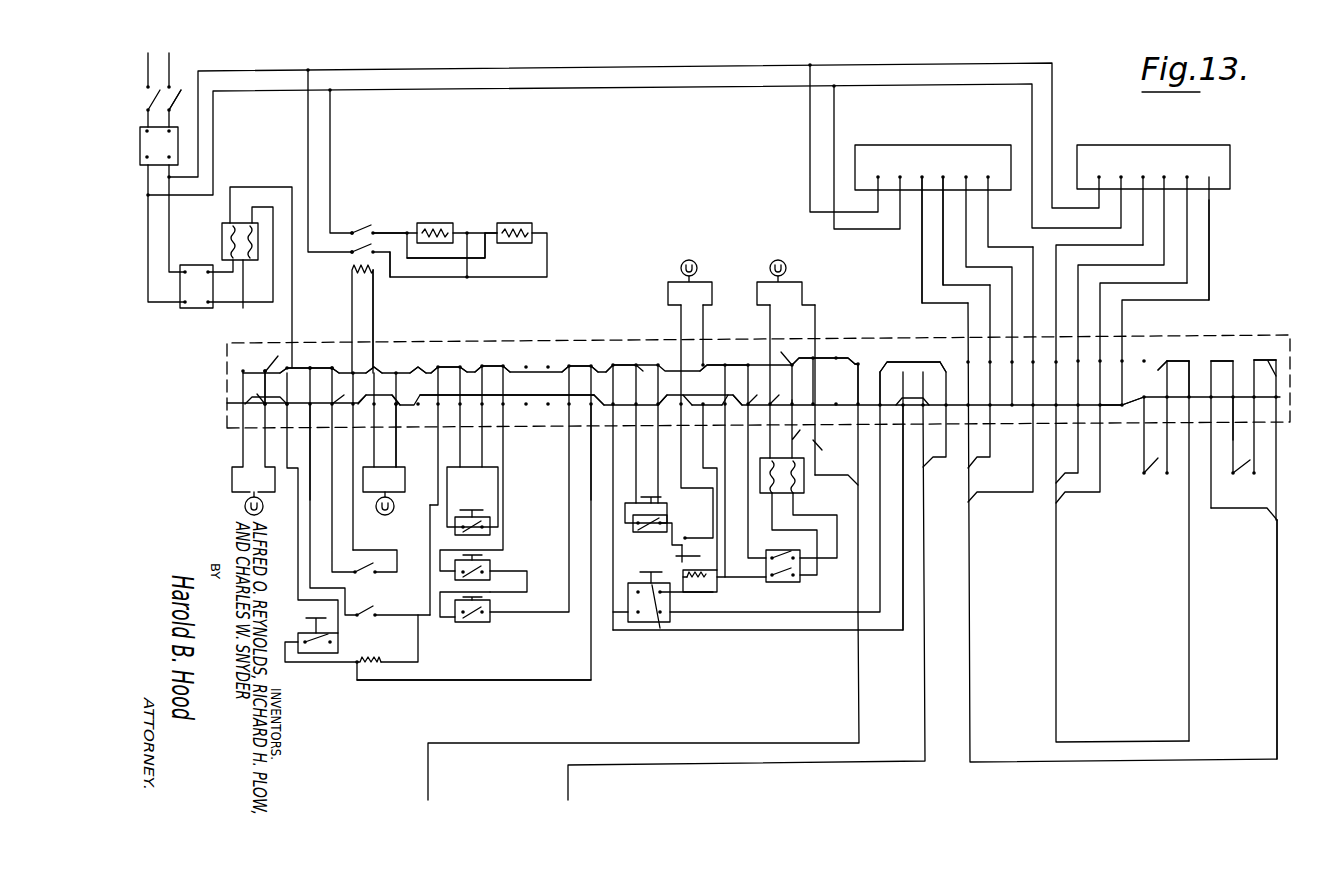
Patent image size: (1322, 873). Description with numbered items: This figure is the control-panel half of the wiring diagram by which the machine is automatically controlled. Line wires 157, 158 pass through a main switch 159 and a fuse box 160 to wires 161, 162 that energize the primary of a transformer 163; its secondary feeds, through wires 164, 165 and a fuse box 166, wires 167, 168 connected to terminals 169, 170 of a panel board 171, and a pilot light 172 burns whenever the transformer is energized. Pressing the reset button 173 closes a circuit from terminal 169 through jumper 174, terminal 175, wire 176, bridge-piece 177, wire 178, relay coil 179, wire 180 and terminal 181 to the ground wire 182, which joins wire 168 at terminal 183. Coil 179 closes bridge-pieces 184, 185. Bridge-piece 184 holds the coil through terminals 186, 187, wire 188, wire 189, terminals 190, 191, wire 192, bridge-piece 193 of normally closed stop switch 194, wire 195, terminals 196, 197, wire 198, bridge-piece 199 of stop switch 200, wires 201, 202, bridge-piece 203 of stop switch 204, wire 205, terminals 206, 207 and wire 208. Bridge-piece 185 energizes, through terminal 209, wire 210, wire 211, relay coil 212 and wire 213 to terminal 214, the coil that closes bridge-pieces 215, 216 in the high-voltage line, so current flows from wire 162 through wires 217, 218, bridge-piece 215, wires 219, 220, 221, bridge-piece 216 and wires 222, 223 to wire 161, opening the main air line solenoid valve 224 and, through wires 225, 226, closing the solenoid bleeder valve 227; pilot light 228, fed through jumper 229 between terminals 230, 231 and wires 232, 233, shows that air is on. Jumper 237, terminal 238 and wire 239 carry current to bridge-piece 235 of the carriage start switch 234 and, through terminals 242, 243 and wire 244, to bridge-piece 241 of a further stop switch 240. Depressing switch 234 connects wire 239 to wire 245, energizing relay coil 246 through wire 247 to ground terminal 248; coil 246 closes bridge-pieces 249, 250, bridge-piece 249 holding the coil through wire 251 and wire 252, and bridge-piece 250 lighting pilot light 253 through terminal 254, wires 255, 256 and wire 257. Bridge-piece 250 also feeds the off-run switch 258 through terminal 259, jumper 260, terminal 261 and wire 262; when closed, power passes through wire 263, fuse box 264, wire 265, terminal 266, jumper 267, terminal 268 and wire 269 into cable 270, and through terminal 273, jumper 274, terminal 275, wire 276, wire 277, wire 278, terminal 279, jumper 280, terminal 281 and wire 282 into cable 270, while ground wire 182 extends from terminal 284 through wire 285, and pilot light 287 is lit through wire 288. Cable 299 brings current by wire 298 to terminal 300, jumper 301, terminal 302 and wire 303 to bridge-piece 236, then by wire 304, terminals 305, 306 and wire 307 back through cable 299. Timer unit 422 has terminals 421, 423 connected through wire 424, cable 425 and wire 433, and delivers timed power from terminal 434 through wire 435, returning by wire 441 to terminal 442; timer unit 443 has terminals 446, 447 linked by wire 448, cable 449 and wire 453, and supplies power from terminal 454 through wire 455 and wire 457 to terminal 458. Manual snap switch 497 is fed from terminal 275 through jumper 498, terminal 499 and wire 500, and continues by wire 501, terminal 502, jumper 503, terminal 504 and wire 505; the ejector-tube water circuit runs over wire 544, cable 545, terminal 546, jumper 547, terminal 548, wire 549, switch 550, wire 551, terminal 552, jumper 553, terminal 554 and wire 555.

The switch contact 157 is at (150, 57).
The switch contact 158 is at (172, 56).
The switch blade 159 is at (173, 92).
The switch 160 is at (176, 136).
The conductor 161 is at (150, 304).
The conductor 162 is at (173, 221).
The relay 163 is at (193, 309).
The conductor 164 is at (230, 304).
The conductor 165 is at (221, 276).
The resistor unit 166 is at (222, 246).
The control panel 167 is at (227, 357).
The conductor 168 is at (293, 289).
The bus bar 169 is at (227, 405).
The contact 170 is at (268, 406).
The contact 171 is at (448, 366).
The lamp 172 is at (245, 507).
The relay coil 173 is at (321, 619).
The contact 174 is at (262, 397).
The contact 175 is at (290, 406).
The conductor 176 is at (298, 527).
The relay contacts 177 is at (302, 641).
The conductor 178 is at (318, 663).
The coil 179 is at (371, 660).
The conductor 180 is at (420, 652).
The contact 181 is at (420, 366).
The conductor 182 is at (351, 368).
The contact 183 is at (268, 368).
The switch 184 is at (372, 612).
The switch 185 is at (360, 571).
The contact 186 is at (290, 366).
The contact 187 is at (311, 366).
The conductor 188 is at (312, 440).
The conductor 189 is at (428, 616).
The contact 190 is at (440, 366).
The contact 191 is at (463, 366).
The relay 192 is at (442, 494).
The relay contacts 193 is at (465, 530).
The contact blade 194 is at (477, 513).
The relay coil 195 is at (476, 495).
The contact 196 is at (486, 365).
The contact 197 is at (507, 365).
The conductor 198 is at (504, 450).
The relay contacts 199 is at (485, 575).
The relay coil 200 is at (484, 556).
The conductor 201 is at (528, 580).
The conductor 202 is at (527, 593).
The relay contacts 203 is at (485, 622).
The relay coil 204 is at (484, 598).
The conductor 205 is at (540, 613).
The contact 206 is at (572, 365).
The contact 207 is at (594, 365).
The conductor 208 is at (493, 542).
The contact 209 is at (334, 367).
The conductor 210 is at (312, 508).
The conductor 211 is at (353, 540).
The coil 212 is at (364, 275).
The conductor 213 is at (375, 312).
The contact 214 is at (376, 366).
The switch 215 is at (356, 254).
The switch 216 is at (364, 227).
The conductor 217 is at (247, 70).
The conductor 218 is at (306, 141).
The circuit 219 is at (424, 275).
The conductor 220 is at (470, 232).
The conductor 221 is at (406, 231).
The conductor 222 is at (331, 170).
The conductor 223 is at (265, 92).
The resistor 224 is at (446, 222).
The conductor 225 is at (548, 268).
The conductor 226 is at (487, 258).
The resistor 227 is at (534, 222).
The lamp 228 is at (392, 514).
The contact 229 is at (368, 400).
The contact 230 is at (355, 405).
The contact 231 is at (399, 406).
The conductor 232 is at (397, 448).
The lamp housing 233 is at (366, 480).
The relay coil 234 is at (646, 572).
The relay contacts 235 is at (668, 598).
The contact blade 236 is at (660, 630).
The contact bar 237 is at (548, 395).
The contact 238 is at (602, 405).
The conductor 239 is at (594, 472).
The relay coil 240 is at (650, 496).
The relay contacts 241 is at (645, 530).
The contact 242 is at (616, 364).
The contact 243 is at (639, 364).
The conductor 244 is at (616, 458).
The conductor 245 is at (682, 576).
The coil 246 is at (706, 576).
The conductor 247 is at (730, 578).
The contact 248 is at (712, 364).
The contact 249 is at (698, 558).
The contact 250 is at (700, 536).
The conductor 251 is at (672, 548).
The relay 252 is at (712, 593).
The lamp 253 is at (696, 262).
The contact 254 is at (660, 365).
The conductor 255 is at (638, 444).
The conductor 256 is at (660, 455).
The conductor 257 is at (704, 318).
The relay contacts 258 is at (784, 583).
The contact 259 is at (690, 405).
The contact bar 260 is at (707, 406).
The contact 261 is at (730, 404).
The conductor 262 is at (746, 441).
The conductor 263 is at (819, 576).
The resistor unit 264 is at (805, 490).
The contact 265 is at (796, 434).
The contact 266 is at (791, 361).
The contact bar 267 is at (821, 361).
The contact 268 is at (859, 361).
The conductor 269 is at (860, 438).
The conductor 270 is at (860, 685).
The contact 273 is at (658, 406).
The contact 274 is at (680, 395).
The contact 275 is at (752, 399).
The conductor 276 is at (728, 500).
The conductor 277 is at (774, 527).
The conductor 278 is at (768, 323).
The contact 279 is at (774, 399).
The contact 280 is at (795, 399).
The contact 281 is at (856, 401).
The conductor 282 is at (836, 475).
The contact 284 is at (815, 365).
The contact 285 is at (824, 446).
The lamp 287 is at (788, 262).
The conductor 288 is at (817, 306).
The conductor 298 is at (906, 429).
The conductor 299 is at (847, 764).
The contact 300 is at (926, 398).
The contact bar 301 is at (912, 397).
The contact 302 is at (901, 398).
The conductor 303 is at (903, 632).
The conductor 304 is at (774, 612).
The contact 305 is at (889, 360).
The contact 306 is at (943, 360).
The contact 307 is at (936, 461).
The terminal 421 is at (921, 175).
The terminal block 422 is at (880, 145).
The terminal 423 is at (945, 175).
The conductor 424 is at (921, 253).
The conductor 425 is at (970, 612).
The contact 433 is at (986, 459).
The terminal 434 is at (968, 175).
The conductor 435 is at (947, 211).
The contact 441 is at (1004, 497).
The terminal 442 is at (990, 175).
The terminal block 443 is at (1117, 145).
The terminal 446 is at (1146, 175).
The terminal 447 is at (1168, 175).
The conductor 448 is at (1080, 248).
The conductor 449 is at (1058, 578).
The contact 453 is at (1067, 471).
The terminal 454 is at (1190, 175).
The conductor 455 is at (1180, 284).
The conductor 457 is at (1212, 275).
The terminal 458 is at (1212, 176).
The switch 497 is at (1163, 478).
The conductor 498 is at (1112, 398).
The contact 499 is at (1145, 395).
The contact 500 is at (1146, 456).
The contact 501 is at (1170, 456).
The contact 502 is at (1164, 359).
The contact bar 503 is at (1177, 359).
The contact 504 is at (1192, 359).
The conductor 505 is at (1189, 602).
The conductor 544 is at (1237, 510).
The conductor 545 is at (1279, 632).
The contact 546 is at (1212, 359).
The contact bar 547 is at (1224, 359).
The contact 548 is at (1236, 359).
The contact 549 is at (1233, 456).
The switch 550 is at (1246, 470).
The contact 551 is at (1256, 447).
The contact 552 is at (1260, 358).
The contact 553 is at (1278, 358).
The contact blade 554 is at (1261, 374).
The conductor 555 is at (1278, 462).